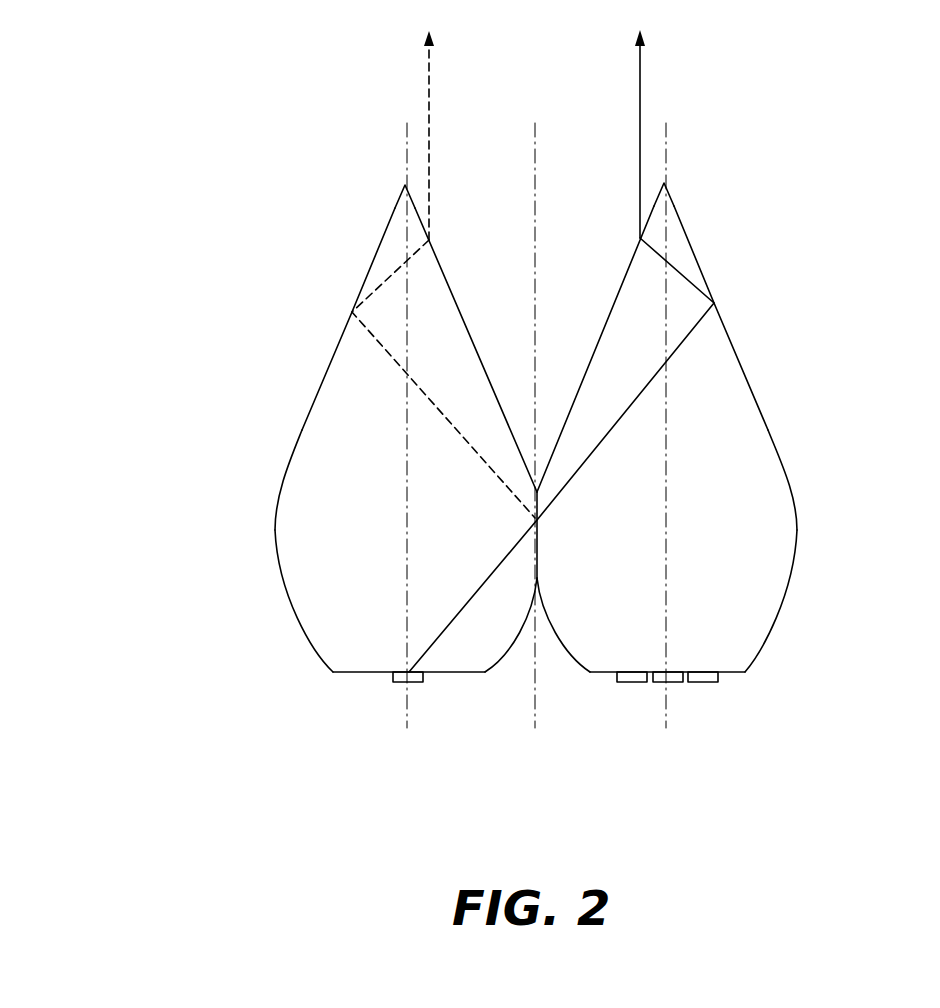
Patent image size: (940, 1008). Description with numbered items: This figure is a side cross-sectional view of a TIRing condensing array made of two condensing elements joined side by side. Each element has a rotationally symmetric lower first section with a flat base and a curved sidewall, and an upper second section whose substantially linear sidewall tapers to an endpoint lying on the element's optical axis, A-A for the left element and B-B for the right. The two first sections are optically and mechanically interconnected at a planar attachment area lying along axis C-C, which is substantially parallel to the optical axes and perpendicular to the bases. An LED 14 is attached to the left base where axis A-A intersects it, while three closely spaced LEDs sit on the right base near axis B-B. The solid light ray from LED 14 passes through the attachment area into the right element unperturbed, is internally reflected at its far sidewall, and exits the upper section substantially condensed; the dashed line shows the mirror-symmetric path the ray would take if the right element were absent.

The LED 14 is at (417, 683).